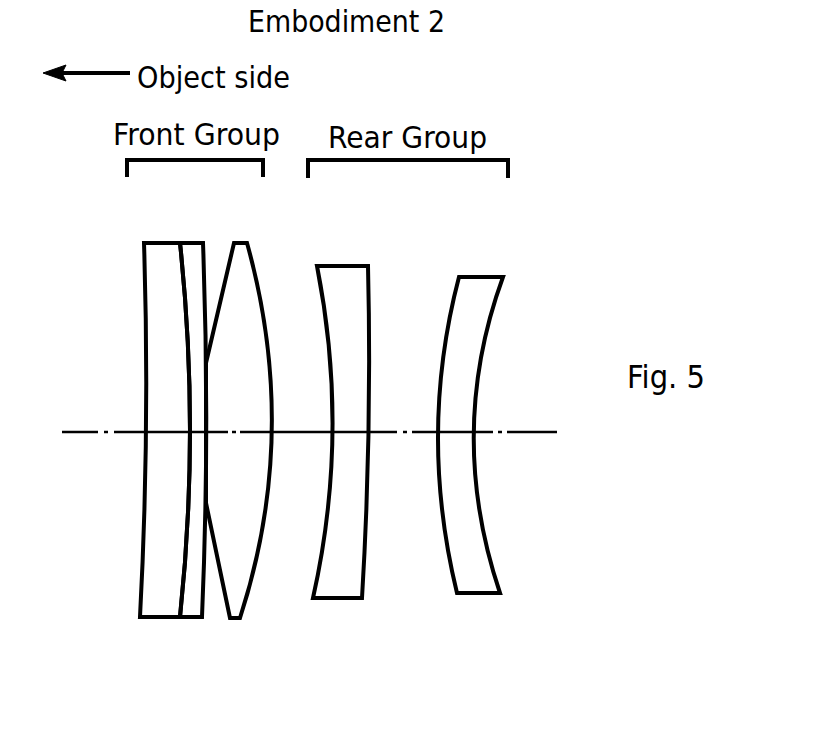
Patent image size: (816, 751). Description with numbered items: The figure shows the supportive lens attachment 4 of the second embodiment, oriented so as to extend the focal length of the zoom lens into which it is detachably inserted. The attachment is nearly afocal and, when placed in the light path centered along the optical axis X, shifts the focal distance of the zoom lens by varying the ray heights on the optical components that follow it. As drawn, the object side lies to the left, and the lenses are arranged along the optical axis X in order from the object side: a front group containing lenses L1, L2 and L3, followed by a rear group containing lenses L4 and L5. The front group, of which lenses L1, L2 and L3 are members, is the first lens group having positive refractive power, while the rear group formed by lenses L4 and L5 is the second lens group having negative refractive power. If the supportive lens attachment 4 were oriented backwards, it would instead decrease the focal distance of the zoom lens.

The supportive lens attachment 4 is at (570, 243).
The optical axis X is at (118, 434).
The first lens L1 is at (158, 250).
The second lens L2 is at (197, 243).
The third lens L3 is at (240, 243).
The fourth lens L4 is at (350, 270).
The fifth lens L5 is at (487, 282).